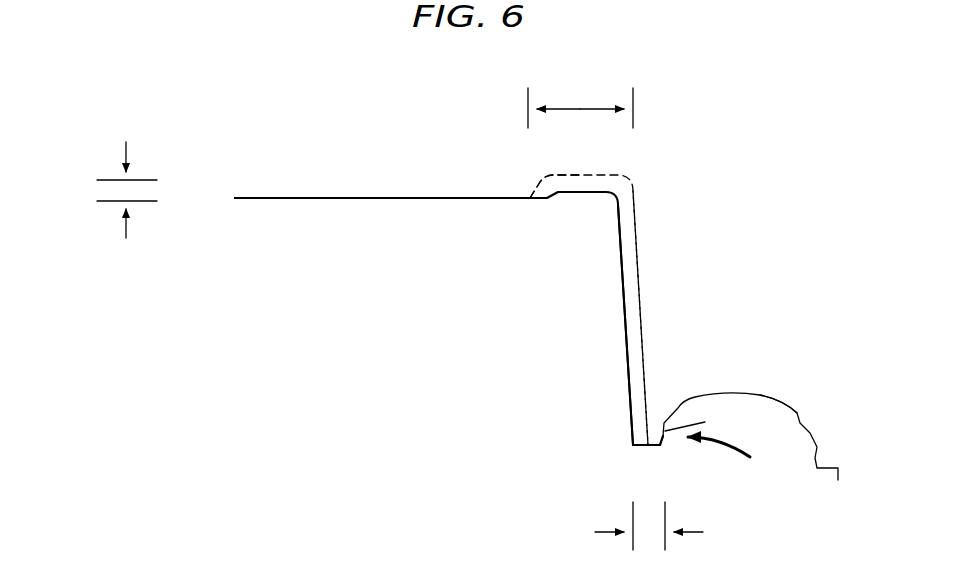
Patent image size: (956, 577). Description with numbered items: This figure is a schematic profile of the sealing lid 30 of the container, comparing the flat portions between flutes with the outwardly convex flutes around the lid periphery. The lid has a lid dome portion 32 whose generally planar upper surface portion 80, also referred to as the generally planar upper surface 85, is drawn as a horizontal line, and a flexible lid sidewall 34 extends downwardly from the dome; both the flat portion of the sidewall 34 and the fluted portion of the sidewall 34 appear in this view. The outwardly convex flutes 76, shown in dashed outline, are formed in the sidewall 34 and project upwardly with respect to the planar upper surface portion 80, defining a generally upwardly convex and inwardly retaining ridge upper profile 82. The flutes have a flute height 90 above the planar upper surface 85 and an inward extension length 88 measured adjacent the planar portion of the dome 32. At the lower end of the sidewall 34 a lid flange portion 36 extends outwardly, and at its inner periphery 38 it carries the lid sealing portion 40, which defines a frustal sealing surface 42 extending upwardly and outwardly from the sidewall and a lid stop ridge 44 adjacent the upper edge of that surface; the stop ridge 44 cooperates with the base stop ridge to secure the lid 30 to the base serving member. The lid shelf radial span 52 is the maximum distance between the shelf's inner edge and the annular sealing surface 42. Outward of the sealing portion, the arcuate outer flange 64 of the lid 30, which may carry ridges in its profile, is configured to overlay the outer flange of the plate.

The sealing lid 30 is at (252, 192).
The lid dome portion 32 is at (422, 198).
The generally planar upper surface 85 is at (297, 198).
The generally planar upper surface portion 80 is at (355, 200).
The retaining ridge upper profile 82 is at (538, 182).
The outwardly convex flutes 76 is at (637, 232).
The flexible lid sidewall 34 is at (623, 285).
The inner periphery 38 is at (645, 447).
The frustal sealing surface 42 is at (666, 446).
The lid flange portion 36 is at (742, 393).
The arcuate outer flange 64 is at (780, 400).
The lid stop ridge 44 is at (705, 422).
The lid sealing portion 40 is at (732, 455).
The flute height 90 is at (126, 153).
The inward extension length 88 is at (572, 110).
The lid shelf radial span 52 is at (605, 532).